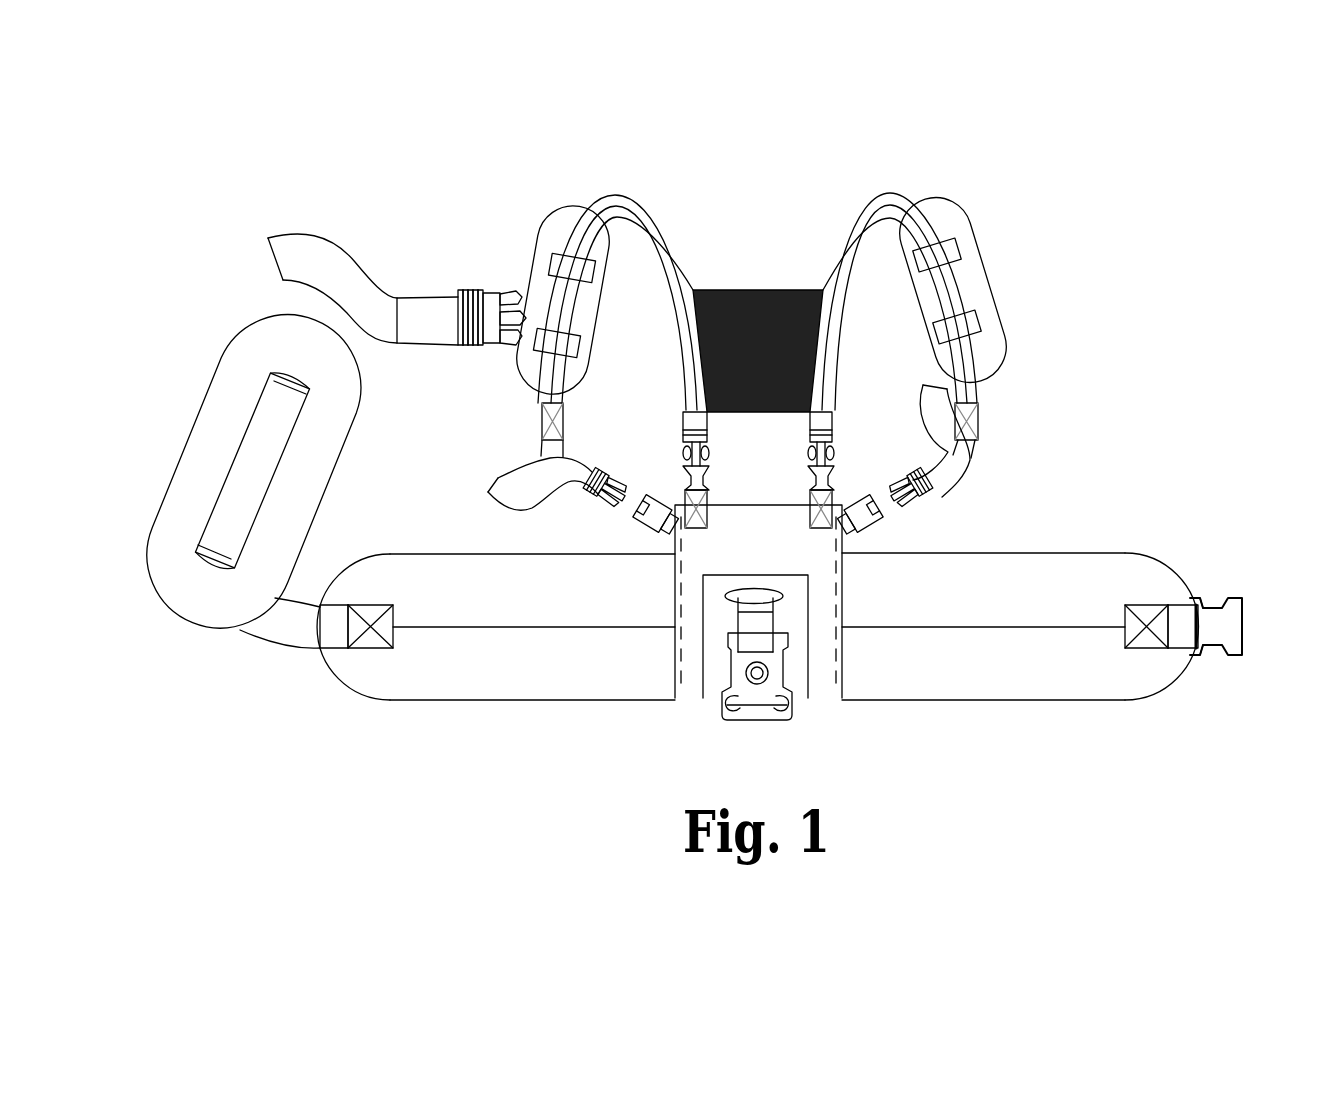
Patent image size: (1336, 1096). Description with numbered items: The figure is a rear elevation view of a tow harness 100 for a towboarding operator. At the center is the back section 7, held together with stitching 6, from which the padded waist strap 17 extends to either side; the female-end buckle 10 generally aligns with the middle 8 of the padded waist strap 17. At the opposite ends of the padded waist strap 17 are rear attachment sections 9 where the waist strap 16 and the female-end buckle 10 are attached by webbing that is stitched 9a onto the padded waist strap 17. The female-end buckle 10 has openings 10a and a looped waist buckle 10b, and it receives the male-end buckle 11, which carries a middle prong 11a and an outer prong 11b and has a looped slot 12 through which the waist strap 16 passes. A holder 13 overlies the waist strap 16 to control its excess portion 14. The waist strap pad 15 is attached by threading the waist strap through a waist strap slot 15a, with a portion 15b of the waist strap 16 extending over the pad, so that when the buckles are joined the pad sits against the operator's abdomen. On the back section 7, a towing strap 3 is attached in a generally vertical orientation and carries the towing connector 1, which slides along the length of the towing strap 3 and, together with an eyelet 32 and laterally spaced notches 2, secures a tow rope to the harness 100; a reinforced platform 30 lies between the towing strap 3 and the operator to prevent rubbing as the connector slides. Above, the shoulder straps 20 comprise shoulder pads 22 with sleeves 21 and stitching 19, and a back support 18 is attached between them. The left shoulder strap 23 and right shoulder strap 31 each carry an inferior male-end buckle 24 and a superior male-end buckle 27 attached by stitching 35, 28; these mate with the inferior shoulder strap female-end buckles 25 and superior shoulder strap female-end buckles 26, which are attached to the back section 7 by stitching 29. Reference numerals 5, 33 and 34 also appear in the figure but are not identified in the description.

The towing connector 1 is at (755, 718).
The laterally spaced notches 2 is at (737, 697).
The towing strap 3 is at (728, 667).
The post 5 is at (765, 610).
The stitching 6 is at (680, 590).
The back section 7 is at (747, 550).
The middle 8 is at (593, 628).
The rear attachment section 9 is at (372, 622).
The stitched webbing 9a is at (372, 624).
The female-end buckle 10 is at (1242, 624).
The openings 10a is at (1214, 607).
The looped waist buckle 10b is at (1195, 603).
The male-end buckle 11 is at (480, 292).
The middle prong 11a is at (510, 290).
The outer prong 11b is at (500, 347).
The looped slot 12 is at (463, 290).
The holder 13 is at (400, 327).
The excess portion 14 is at (280, 257).
The waist strap pad 15 is at (240, 357).
The waist strap slot 15a is at (317, 390).
The portion of the waist strap 15b is at (258, 450).
The waist strap 16 is at (287, 632).
The padded waist strap 17 is at (1010, 577).
The back support 18 is at (757, 290).
The stitching 19 is at (867, 220).
The shoulder straps 20 is at (627, 198).
The sleeves 21 is at (560, 343).
The shoulder pads 22 is at (584, 383).
The left shoulder strap 23 is at (500, 488).
The inferior male-end buckle 24 is at (593, 490).
The inferior shoulder strap female-end buckle 25 is at (643, 500).
The superior shoulder strap female-end buckle 26 is at (702, 477).
The superior male-end buckle 27 is at (685, 452).
The stitching 28 is at (697, 424).
The stitching 29 is at (705, 505).
The reinforced platform 30 is at (710, 663).
The right shoulder strap 31 is at (975, 443).
The eyelet 32 is at (756, 686).
The buckle tongue 33 is at (1212, 633).
The buckle receiving slot 34 is at (1182, 640).
The stitching 35 is at (550, 423).
The harness 100 is at (1008, 789).